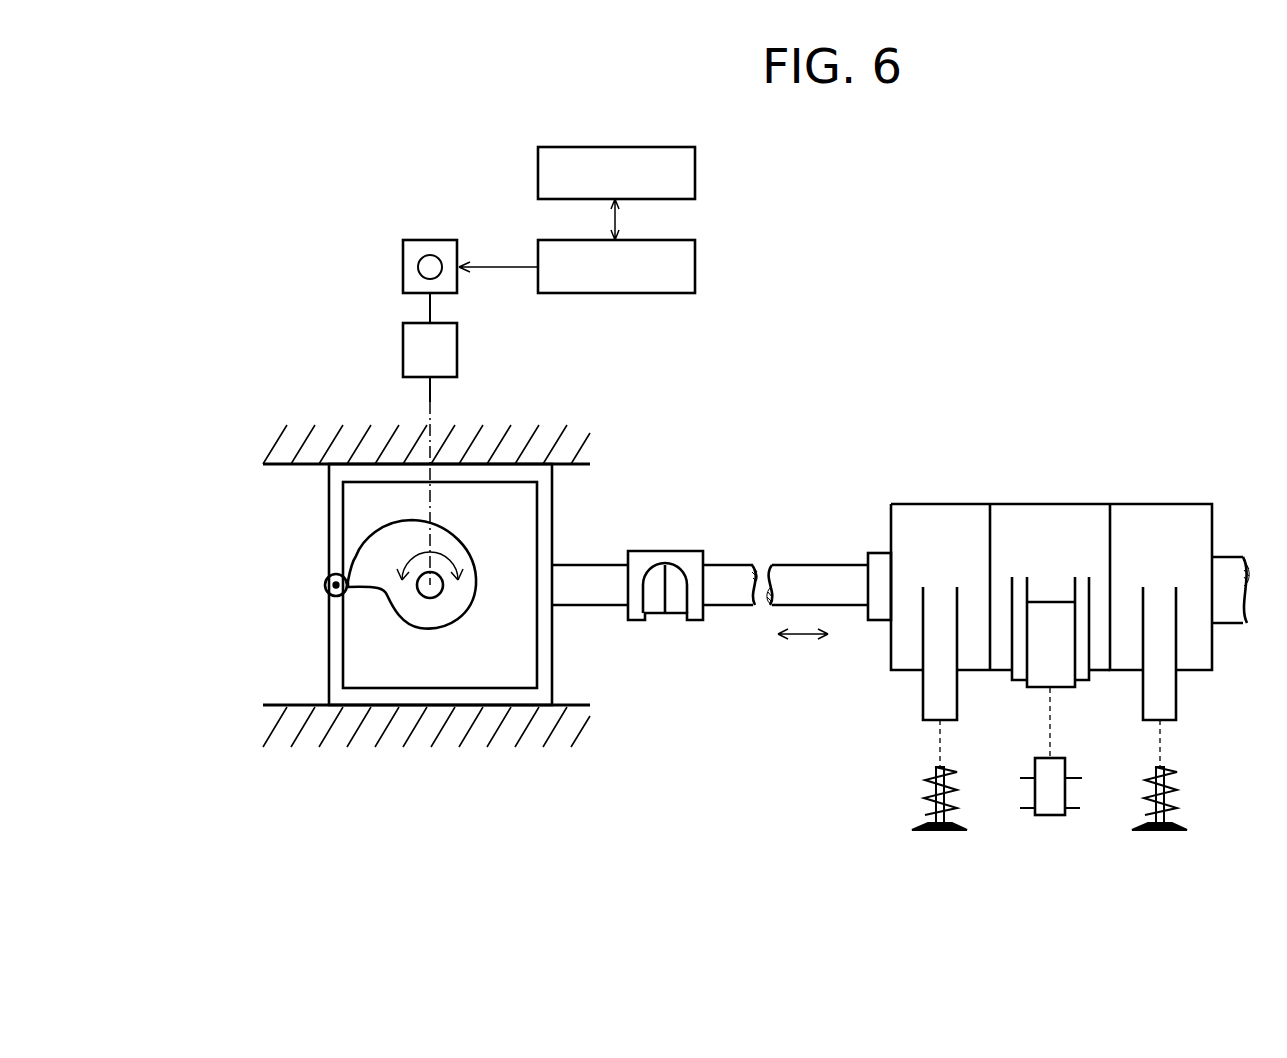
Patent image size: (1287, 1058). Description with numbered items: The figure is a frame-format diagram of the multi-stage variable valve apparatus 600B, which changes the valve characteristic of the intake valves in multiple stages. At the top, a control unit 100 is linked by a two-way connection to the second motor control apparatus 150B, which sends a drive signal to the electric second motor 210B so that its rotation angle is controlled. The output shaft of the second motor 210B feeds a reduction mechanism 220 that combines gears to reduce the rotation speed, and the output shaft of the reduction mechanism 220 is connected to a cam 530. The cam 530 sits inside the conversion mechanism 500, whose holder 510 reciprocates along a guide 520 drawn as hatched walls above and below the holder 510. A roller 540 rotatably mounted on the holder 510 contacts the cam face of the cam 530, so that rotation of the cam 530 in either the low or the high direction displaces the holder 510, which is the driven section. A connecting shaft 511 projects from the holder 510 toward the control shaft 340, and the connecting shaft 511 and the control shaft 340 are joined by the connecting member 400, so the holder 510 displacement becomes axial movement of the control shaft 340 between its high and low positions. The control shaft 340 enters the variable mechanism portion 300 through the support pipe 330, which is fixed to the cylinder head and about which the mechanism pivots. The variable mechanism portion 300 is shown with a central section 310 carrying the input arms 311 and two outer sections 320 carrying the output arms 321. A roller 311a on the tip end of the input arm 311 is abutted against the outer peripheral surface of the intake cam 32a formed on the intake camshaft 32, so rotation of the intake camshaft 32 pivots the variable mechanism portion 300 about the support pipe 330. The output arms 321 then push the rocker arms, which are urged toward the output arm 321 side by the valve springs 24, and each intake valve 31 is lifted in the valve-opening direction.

The electronic control unit 100 is at (575, 147).
The second motor control apparatus 150B is at (575, 240).
The second motor 210B is at (403, 264).
The reduction mechanism 220 is at (457, 345).
The variable mechanism portion 300 is at (1113, 470).
The input arm section 310 is at (1042, 504).
The input arm 311 is at (1014, 682).
The roller 311a is at (1030, 690).
The output arm section 320 is at (942, 504).
The output arm 321 is at (923, 706).
The support pipe 330 is at (875, 552).
The control shaft 340 is at (805, 564).
The connecting member 400 is at (673, 551).
The conversion mechanism 500 is at (221, 497).
The holder 510 is at (329, 665).
The connecting shaft 511 is at (585, 563).
The guide 520 is at (278, 728).
The cam 530 is at (446, 627).
The roller 540 is at (323, 585).
The multi-stage variable valve apparatus 600B is at (888, 320).
The valve spring 24 is at (948, 770).
The intake valve 31 is at (924, 820).
The intake camshaft 32 is at (1072, 808).
The intake cam 32a is at (1067, 765).